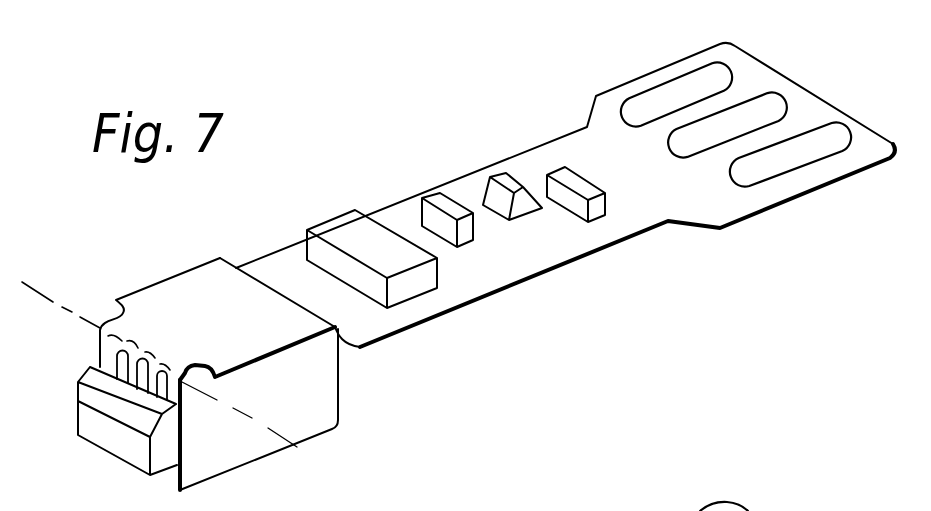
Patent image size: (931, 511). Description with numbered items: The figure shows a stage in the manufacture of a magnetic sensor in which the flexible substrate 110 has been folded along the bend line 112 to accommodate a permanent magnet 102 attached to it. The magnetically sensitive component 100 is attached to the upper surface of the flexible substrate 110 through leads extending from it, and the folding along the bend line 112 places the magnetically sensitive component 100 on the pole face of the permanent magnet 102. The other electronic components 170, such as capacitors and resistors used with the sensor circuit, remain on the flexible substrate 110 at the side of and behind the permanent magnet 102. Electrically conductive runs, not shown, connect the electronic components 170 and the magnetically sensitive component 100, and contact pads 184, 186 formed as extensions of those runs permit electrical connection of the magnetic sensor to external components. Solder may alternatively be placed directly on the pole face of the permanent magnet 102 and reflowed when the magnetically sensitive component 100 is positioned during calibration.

The magnetically sensitive component 100 is at (113, 443).
The permanent magnet 102 is at (323, 417).
The flexible substrate 110 is at (198, 270).
The bend line 112 is at (50, 298).
The electronic components 170 is at (333, 222).
The contact pad 184 is at (779, 105).
The contact pad 186 is at (797, 163).